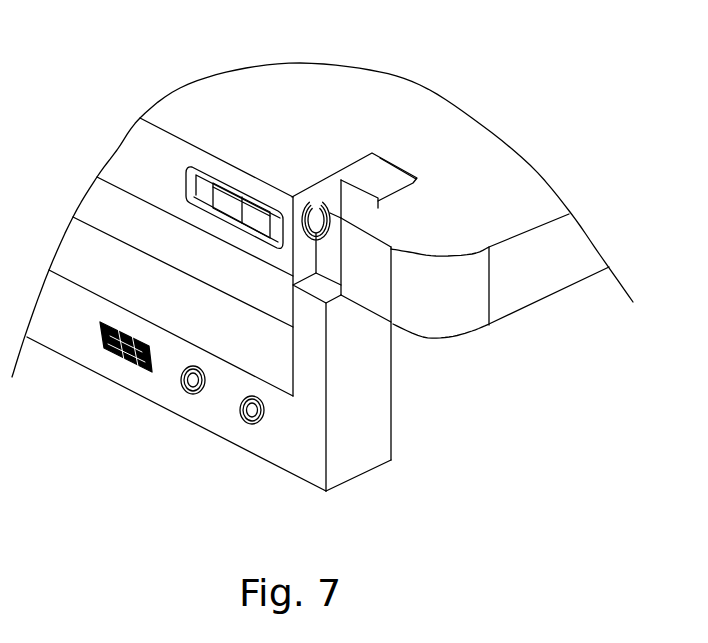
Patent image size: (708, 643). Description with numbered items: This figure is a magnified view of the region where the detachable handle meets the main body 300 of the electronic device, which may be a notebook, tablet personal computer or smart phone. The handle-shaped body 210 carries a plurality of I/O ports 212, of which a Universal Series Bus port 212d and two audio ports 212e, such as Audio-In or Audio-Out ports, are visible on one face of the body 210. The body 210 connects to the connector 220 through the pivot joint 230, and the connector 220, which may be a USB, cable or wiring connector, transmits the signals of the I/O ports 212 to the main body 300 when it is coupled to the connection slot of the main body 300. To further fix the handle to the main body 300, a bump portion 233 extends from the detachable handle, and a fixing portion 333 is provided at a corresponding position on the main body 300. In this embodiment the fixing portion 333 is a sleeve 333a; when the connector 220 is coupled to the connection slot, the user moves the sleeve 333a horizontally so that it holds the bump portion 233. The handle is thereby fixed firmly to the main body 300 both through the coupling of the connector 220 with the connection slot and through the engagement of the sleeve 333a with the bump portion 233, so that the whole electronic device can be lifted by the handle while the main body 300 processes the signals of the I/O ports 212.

The main body 300 is at (522, 286).
The body 210 is at (376, 397).
The I/O ports 212 is at (219, 538).
The Universal Series Bus (USB) port 212d is at (123, 360).
The audio ports 212e is at (192, 394).
The connector 220 is at (376, 177).
The pivot joint 230 is at (338, 233).
The bump portion 233 is at (314, 203).
The fixing portion 333 is at (187, 197).
The sleeve 333a is at (293, 197).